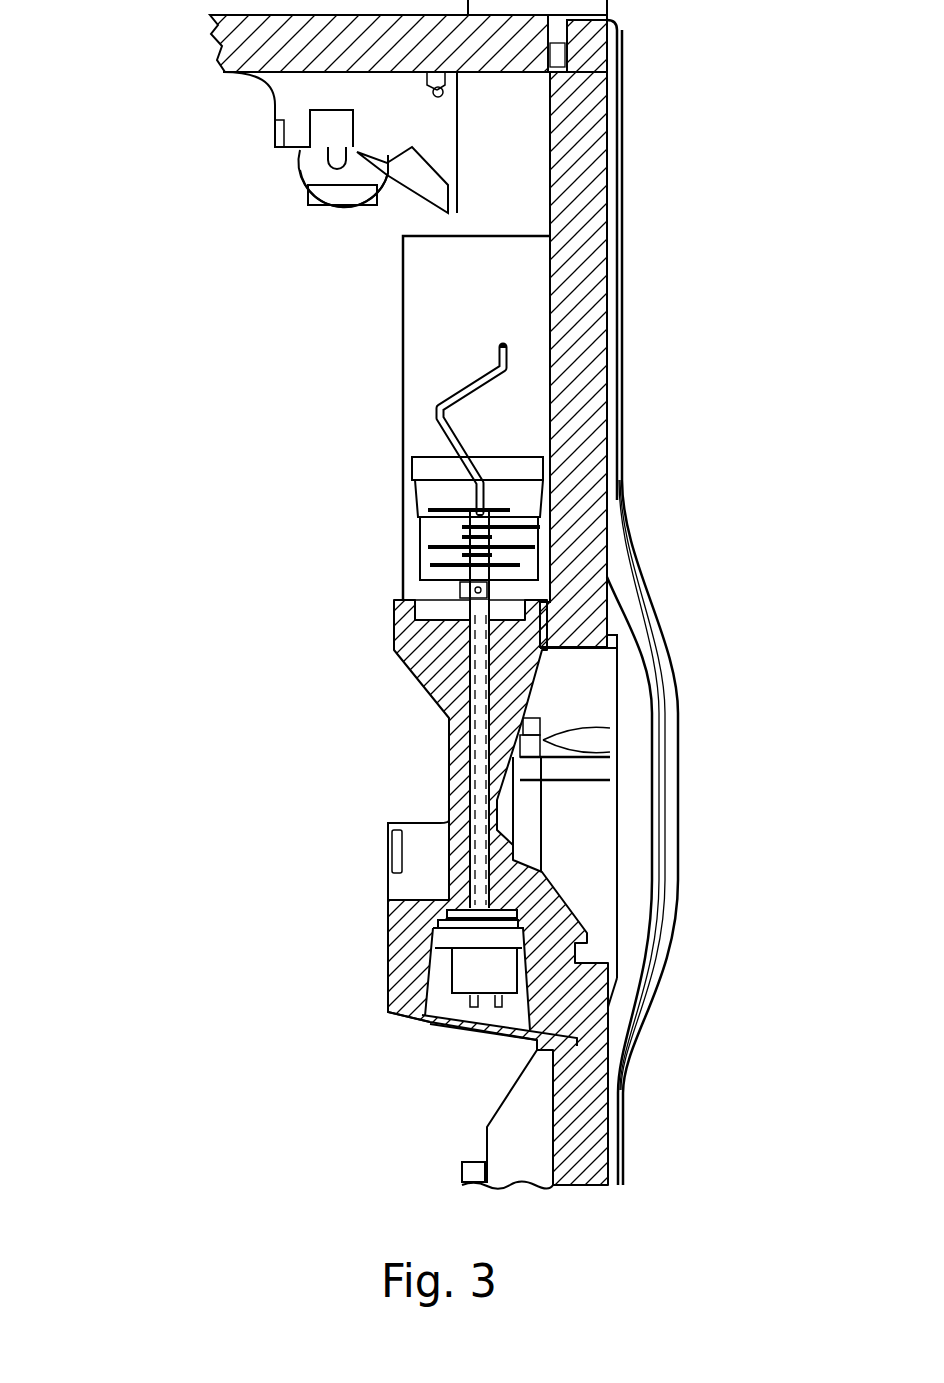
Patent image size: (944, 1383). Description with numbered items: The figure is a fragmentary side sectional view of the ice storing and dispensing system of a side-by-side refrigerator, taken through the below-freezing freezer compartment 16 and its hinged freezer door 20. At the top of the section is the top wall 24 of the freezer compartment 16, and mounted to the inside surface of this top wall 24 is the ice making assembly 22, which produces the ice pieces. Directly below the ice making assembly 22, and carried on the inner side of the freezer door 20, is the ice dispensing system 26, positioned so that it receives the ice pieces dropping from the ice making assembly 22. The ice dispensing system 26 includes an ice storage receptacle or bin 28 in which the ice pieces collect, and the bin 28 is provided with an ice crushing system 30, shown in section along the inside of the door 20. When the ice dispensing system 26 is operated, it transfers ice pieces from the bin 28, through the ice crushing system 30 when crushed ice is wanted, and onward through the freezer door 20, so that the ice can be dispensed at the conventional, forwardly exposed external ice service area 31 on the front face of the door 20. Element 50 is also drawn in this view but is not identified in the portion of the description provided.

The freezer compartment 16 is at (112, 688).
The freezer door 20 is at (590, 272).
The ice making assembly 22 is at (249, 161).
The top wall 24 is at (223, 73).
The ice dispensing system 26 is at (272, 507).
The ice storage receptacle or bin 28 is at (398, 412).
The ice crushing system 30 is at (375, 590).
The external ice service area 31 is at (590, 683).
The support plate 50 is at (460, 153).